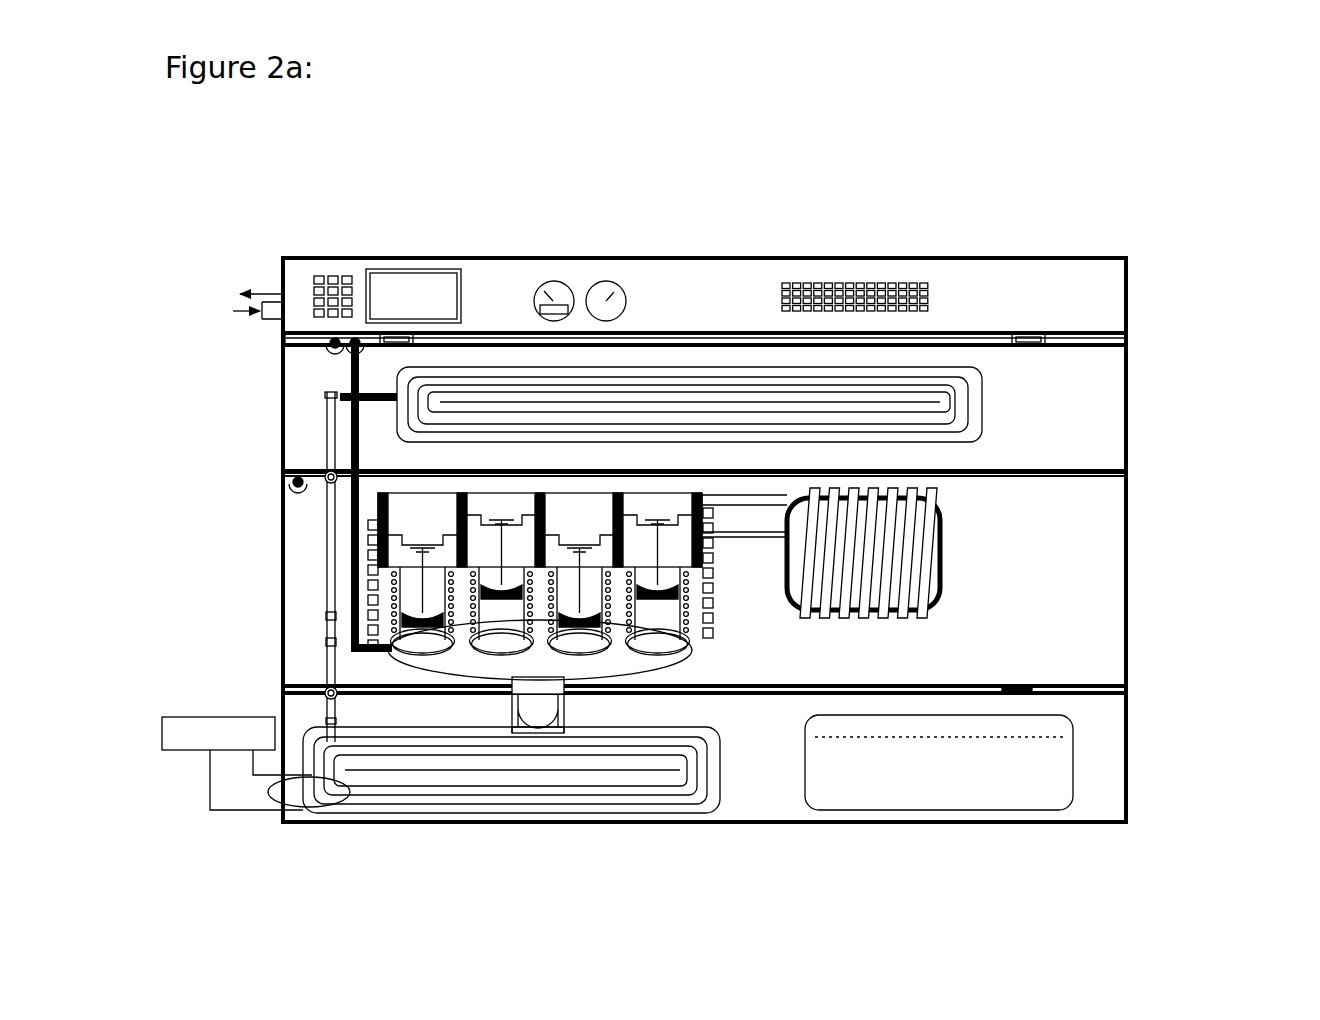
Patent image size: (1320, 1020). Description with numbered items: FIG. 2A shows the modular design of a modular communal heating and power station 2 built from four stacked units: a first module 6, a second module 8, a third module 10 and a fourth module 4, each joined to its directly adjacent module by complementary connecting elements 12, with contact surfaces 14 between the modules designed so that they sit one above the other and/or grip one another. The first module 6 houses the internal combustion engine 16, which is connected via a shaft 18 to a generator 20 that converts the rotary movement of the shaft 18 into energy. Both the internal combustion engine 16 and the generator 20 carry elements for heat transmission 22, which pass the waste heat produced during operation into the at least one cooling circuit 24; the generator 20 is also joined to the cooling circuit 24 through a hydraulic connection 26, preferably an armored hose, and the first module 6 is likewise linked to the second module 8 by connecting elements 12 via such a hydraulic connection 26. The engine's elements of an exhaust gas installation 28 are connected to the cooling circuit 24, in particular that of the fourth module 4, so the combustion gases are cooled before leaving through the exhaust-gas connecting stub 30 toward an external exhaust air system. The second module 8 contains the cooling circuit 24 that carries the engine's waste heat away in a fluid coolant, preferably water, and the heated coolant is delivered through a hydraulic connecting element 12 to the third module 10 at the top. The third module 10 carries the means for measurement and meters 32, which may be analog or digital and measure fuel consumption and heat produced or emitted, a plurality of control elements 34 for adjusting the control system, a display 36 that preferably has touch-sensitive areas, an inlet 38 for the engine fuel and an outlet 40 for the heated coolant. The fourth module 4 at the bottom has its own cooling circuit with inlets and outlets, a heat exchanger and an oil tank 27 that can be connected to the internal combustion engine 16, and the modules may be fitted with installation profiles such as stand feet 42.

The modular communal heating and power station 2 is at (785, 182).
The fourth module 4 is at (1132, 730).
The first module 6 is at (1132, 573).
The second module 8 is at (1132, 416).
The third module 10 is at (1132, 300).
The connecting elements 12 is at (324, 700).
The contact surfaces 14 is at (1132, 472).
The internal combustion engine 16 is at (374, 512).
The shaft 18 is at (738, 540).
The generator 20 is at (950, 576).
The elements for heat transmission 22 is at (724, 591).
The cooling circuit 24 is at (986, 387).
The hydraulic connection 26 is at (720, 498).
The oil tank 27 is at (1005, 775).
The elements of an exhaust gas installation 28 is at (392, 648).
The exhaust-gas connecting stub 30 is at (232, 795).
The meters 32 is at (556, 279).
The control elements 34 is at (330, 274).
The display 36 is at (440, 268).
The inlet 38 is at (263, 322).
The outlet 40 is at (262, 283).
The stand feet 42 is at (1034, 670).